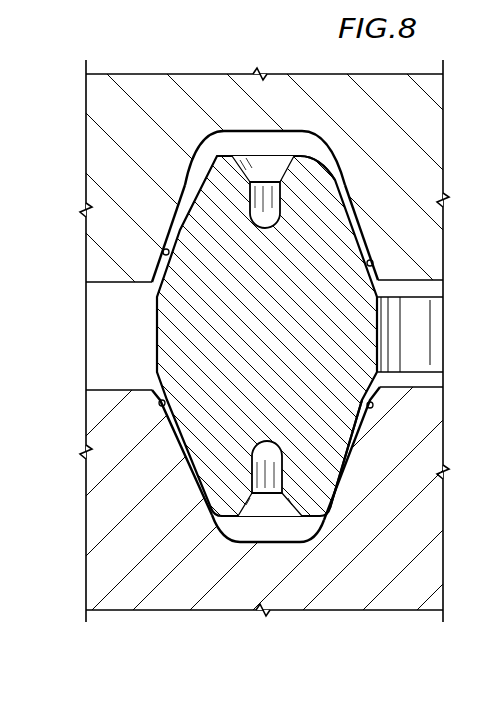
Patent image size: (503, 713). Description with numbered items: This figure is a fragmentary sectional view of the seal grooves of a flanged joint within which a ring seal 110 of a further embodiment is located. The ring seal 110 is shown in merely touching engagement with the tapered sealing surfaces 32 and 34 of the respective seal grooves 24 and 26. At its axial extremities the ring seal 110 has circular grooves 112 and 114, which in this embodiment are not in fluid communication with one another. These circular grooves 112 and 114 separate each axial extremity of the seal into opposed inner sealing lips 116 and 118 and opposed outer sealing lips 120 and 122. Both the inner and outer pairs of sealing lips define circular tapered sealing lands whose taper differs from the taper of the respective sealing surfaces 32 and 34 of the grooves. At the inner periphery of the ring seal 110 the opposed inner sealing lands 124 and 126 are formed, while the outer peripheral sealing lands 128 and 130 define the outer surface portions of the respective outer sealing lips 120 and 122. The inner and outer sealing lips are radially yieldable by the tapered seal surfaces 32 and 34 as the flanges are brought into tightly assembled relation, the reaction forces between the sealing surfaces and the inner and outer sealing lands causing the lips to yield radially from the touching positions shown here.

The seal groove 24 is at (223, 133).
The seal groove 26 is at (241, 530).
The tapered sealing surface 32 is at (162, 252).
The tapered sealing surface 34 is at (374, 262).
The ring seal 110 is at (190, 310).
The circular groove 112 is at (263, 190).
The circular groove 114 is at (270, 472).
The inner sealing lip 116 is at (315, 187).
The inner sealing lip 118 is at (316, 483).
The outer sealing lip 120 is at (200, 178).
The outer sealing lip 122 is at (213, 480).
The inner sealing land 124 is at (355, 221).
The inner sealing land 126 is at (360, 450).
The outer peripheral sealing land 128 is at (173, 217).
The outer peripheral sealing land 130 is at (175, 455).